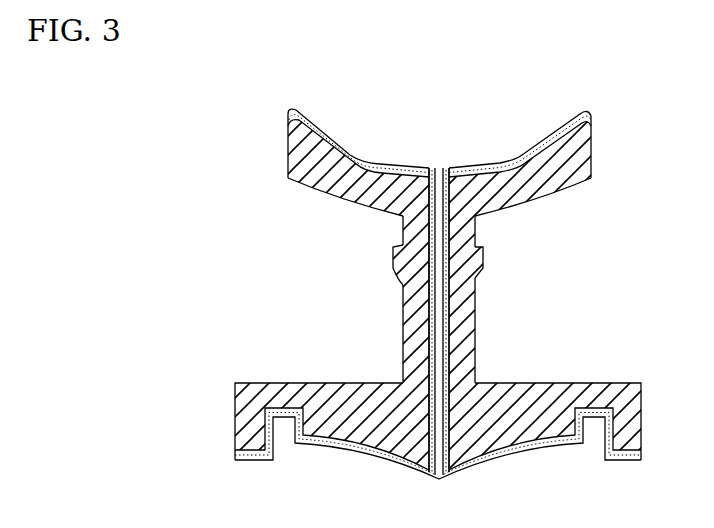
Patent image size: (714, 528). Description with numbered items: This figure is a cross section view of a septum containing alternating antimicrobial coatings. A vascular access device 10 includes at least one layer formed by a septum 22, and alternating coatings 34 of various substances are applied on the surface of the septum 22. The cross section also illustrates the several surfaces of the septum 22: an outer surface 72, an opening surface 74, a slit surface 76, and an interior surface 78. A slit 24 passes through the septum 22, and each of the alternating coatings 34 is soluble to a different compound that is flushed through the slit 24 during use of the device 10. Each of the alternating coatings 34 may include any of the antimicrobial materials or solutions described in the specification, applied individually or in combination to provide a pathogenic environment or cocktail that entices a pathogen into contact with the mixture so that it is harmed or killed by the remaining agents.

The vascular access device 10 is at (190, 178).
The septum 22 is at (328, 190).
The slit 24 is at (436, 155).
The alternating coatings 34 is at (373, 160).
The outer surface 72 is at (477, 330).
The opening surface 74 is at (508, 160).
The slit surface 76 is at (455, 282).
The interior surface 78 is at (500, 453).